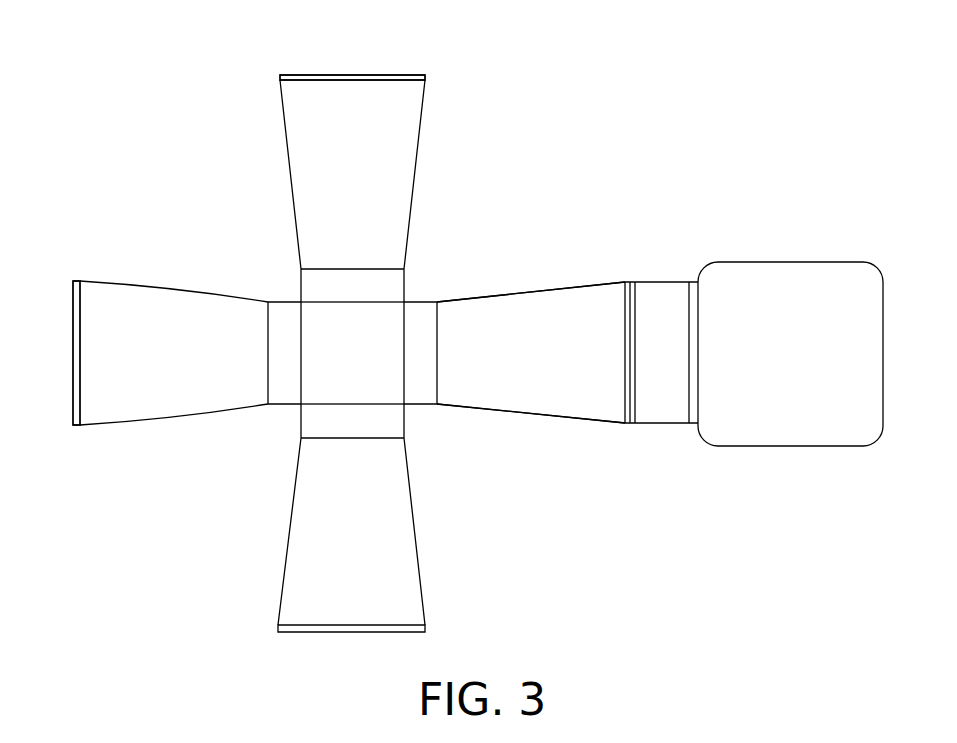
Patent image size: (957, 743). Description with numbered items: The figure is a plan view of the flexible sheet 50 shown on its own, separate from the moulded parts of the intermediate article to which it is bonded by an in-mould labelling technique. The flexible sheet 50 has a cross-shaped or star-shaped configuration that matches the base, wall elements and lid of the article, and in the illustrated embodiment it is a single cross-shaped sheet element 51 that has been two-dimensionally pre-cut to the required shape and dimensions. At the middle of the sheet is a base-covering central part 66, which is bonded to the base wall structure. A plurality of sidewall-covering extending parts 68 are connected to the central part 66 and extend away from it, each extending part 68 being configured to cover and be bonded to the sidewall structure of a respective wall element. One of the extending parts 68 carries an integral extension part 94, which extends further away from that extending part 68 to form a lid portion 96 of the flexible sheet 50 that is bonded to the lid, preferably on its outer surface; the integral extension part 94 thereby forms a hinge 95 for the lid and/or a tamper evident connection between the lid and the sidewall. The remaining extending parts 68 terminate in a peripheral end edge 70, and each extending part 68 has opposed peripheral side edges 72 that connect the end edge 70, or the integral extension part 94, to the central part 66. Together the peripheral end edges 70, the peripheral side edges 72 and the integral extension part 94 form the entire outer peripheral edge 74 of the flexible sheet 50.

The flexible sheet 50 is at (205, 413).
The single cross-shaped sheet element 51 is at (830, 272).
The central part 66 is at (318, 340).
The sidewall-covering extending part 68 is at (320, 120).
The peripheral end edge 70 is at (380, 72).
The peripheral side edge 72 is at (545, 288).
The outer peripheral edge 74 is at (88, 281).
The integral extension part 94 is at (750, 272).
The hinge 95 is at (663, 297).
The lid portion 96 is at (767, 302).